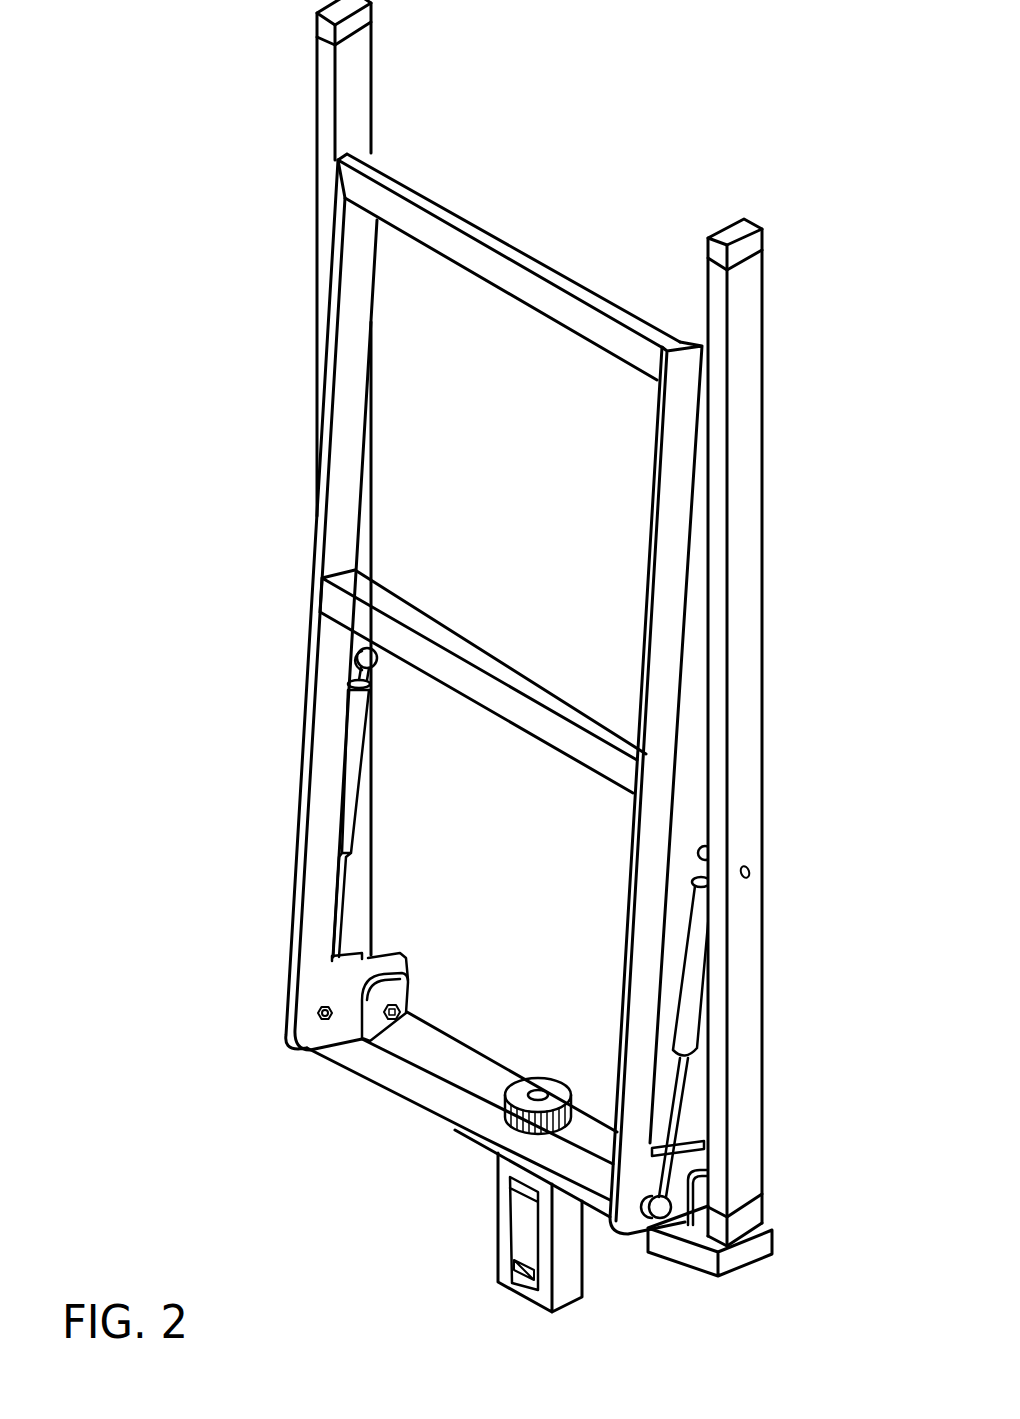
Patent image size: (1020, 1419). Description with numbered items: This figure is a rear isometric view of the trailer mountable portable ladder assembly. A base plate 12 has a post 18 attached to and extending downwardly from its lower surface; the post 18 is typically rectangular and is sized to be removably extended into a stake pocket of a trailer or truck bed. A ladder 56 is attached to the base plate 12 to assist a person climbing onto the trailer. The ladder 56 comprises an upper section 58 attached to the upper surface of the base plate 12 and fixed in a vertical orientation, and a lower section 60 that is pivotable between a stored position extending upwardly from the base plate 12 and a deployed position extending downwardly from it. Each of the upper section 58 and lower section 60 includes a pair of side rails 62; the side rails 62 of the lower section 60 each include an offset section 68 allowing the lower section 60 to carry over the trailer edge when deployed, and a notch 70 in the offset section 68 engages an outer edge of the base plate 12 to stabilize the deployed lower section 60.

The base plate 12 is at (420, 1095).
The post 18 is at (497, 1208).
The ladder 56 is at (825, 802).
The upper section 58 is at (757, 1093).
The lower section 60 is at (343, 299).
The side rails 62 is at (305, 872).
The offset section 68 is at (337, 980).
The notch 70 is at (373, 957).